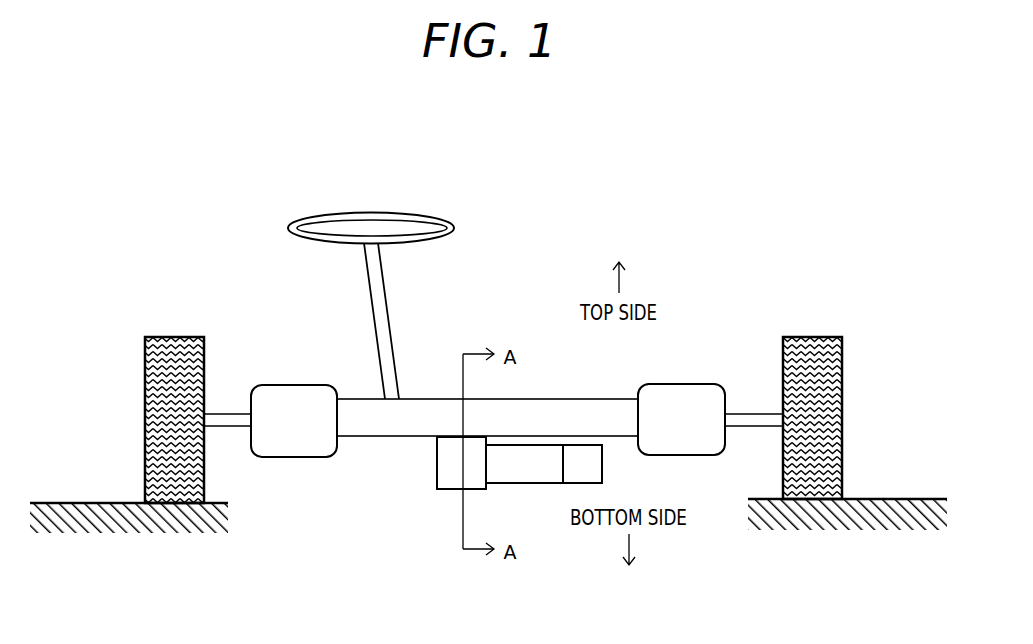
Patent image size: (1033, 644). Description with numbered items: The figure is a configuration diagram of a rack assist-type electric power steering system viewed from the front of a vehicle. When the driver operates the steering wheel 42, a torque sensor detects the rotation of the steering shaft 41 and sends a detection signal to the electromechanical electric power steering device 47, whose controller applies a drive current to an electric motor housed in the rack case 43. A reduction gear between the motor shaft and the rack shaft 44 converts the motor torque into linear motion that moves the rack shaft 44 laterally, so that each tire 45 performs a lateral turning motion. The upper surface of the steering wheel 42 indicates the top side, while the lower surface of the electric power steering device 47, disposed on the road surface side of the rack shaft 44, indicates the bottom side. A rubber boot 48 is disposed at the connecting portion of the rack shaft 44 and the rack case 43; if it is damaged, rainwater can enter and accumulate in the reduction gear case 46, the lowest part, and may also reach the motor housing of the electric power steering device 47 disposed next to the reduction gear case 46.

The steering shaft 41 is at (378, 320).
The steering wheel 42 is at (346, 210).
The rack case 43 is at (565, 400).
The rack shaft 44 is at (738, 437).
The tire 45 is at (175, 337).
The reduction gear case 46 is at (437, 465).
The electric power steering device 47 is at (525, 478).
The rubber boot 48 is at (694, 385).